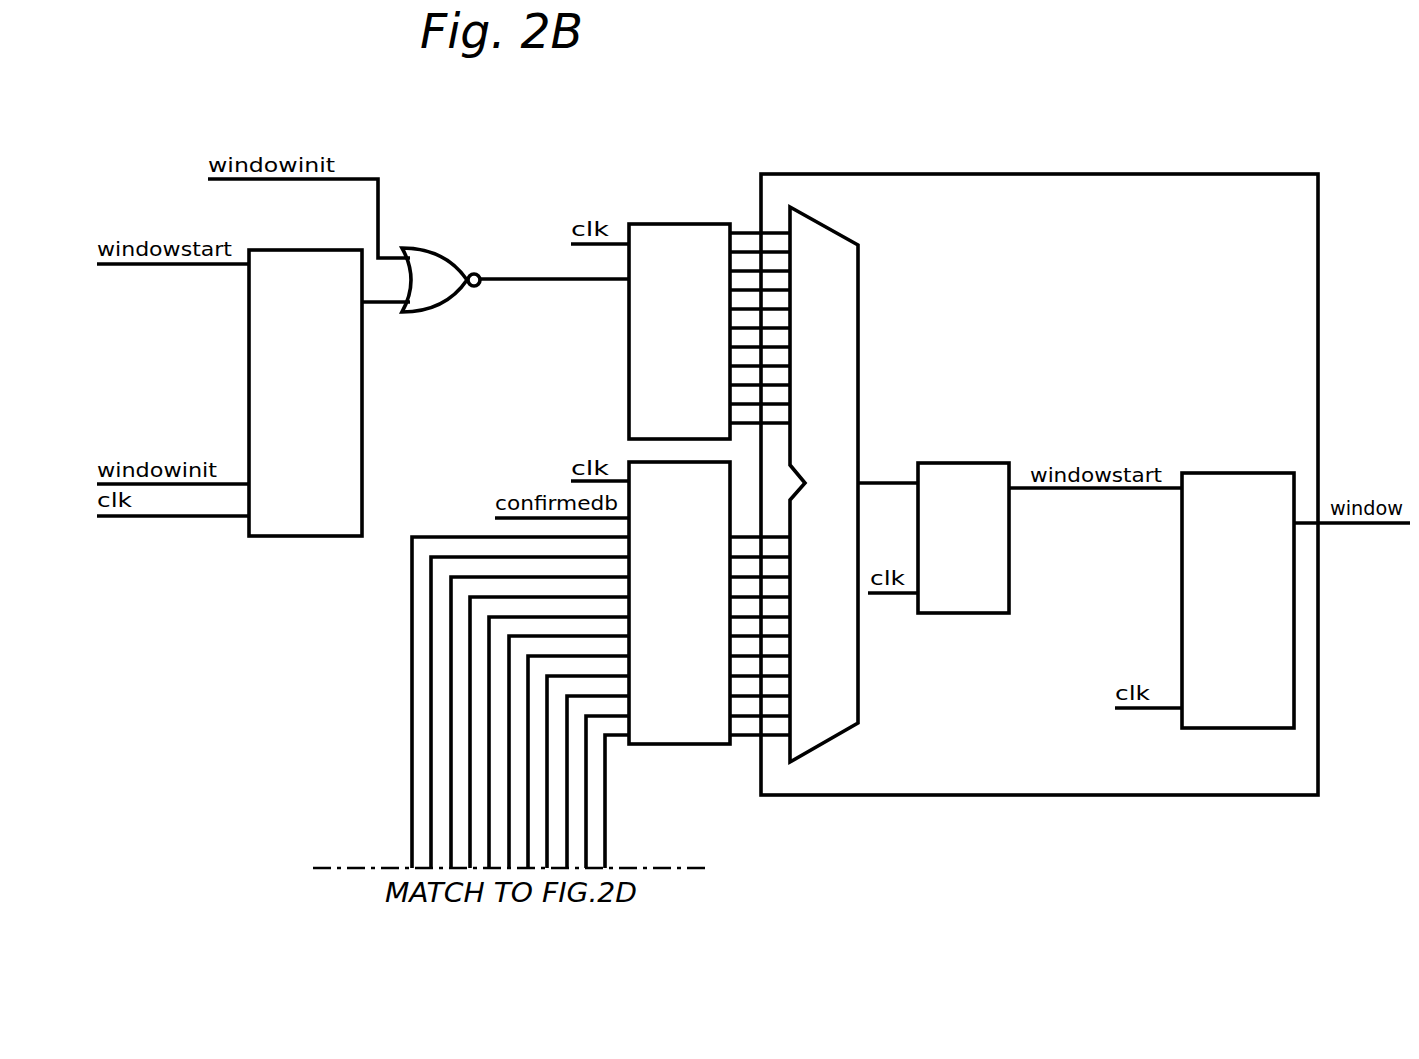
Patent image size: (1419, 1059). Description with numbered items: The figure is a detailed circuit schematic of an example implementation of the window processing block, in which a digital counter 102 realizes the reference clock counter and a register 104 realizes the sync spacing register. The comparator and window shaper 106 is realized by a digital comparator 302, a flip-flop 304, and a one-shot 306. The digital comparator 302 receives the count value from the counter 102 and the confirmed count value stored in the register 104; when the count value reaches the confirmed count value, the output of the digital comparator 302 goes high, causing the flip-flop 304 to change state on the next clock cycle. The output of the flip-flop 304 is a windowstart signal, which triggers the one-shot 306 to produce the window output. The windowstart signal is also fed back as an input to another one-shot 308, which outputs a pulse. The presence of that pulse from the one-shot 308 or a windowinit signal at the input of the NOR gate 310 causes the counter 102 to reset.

The digital counter 102 is at (687, 223).
The register 104 is at (679, 745).
The comparator and window shaper 106 is at (1115, 174).
The digital comparator 302 is at (858, 318).
The flip-flop 304 is at (970, 463).
The one-shot 306 is at (1230, 473).
The one-shot 308 is at (302, 537).
The NOR gate 310 is at (435, 312).